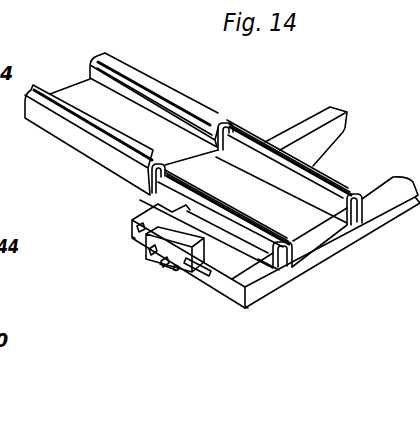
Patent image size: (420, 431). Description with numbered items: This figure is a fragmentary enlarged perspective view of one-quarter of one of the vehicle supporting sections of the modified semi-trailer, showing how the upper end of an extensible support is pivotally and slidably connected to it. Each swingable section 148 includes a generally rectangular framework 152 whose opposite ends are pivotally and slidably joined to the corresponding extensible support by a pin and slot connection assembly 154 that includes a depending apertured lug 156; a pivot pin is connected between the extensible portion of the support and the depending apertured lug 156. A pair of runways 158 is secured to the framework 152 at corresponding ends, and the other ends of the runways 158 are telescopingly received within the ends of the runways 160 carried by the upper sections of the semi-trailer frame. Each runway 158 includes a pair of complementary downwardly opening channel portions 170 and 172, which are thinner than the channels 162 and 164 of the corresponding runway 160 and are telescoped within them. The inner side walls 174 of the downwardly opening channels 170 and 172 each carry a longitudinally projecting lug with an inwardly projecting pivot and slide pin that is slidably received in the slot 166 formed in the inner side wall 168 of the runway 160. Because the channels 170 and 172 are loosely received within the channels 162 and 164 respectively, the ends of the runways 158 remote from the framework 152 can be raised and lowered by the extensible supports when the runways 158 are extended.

The swingable section 148 is at (217, 280).
The framework 152 is at (343, 238).
The pin and slot connection assembly 154 is at (146, 266).
The depending apertured lug 156 is at (182, 276).
The runway 158 is at (333, 188).
The runway 160 is at (218, 122).
The channel 162 is at (161, 85).
The channel 164 is at (102, 152).
The slot 166 is at (168, 108).
The inner side wall 168 is at (192, 115).
The downwardly opening channel portion 170 is at (322, 164).
The downwardly opening channel portion 172 is at (277, 268).
The inner side wall 174 is at (287, 176).